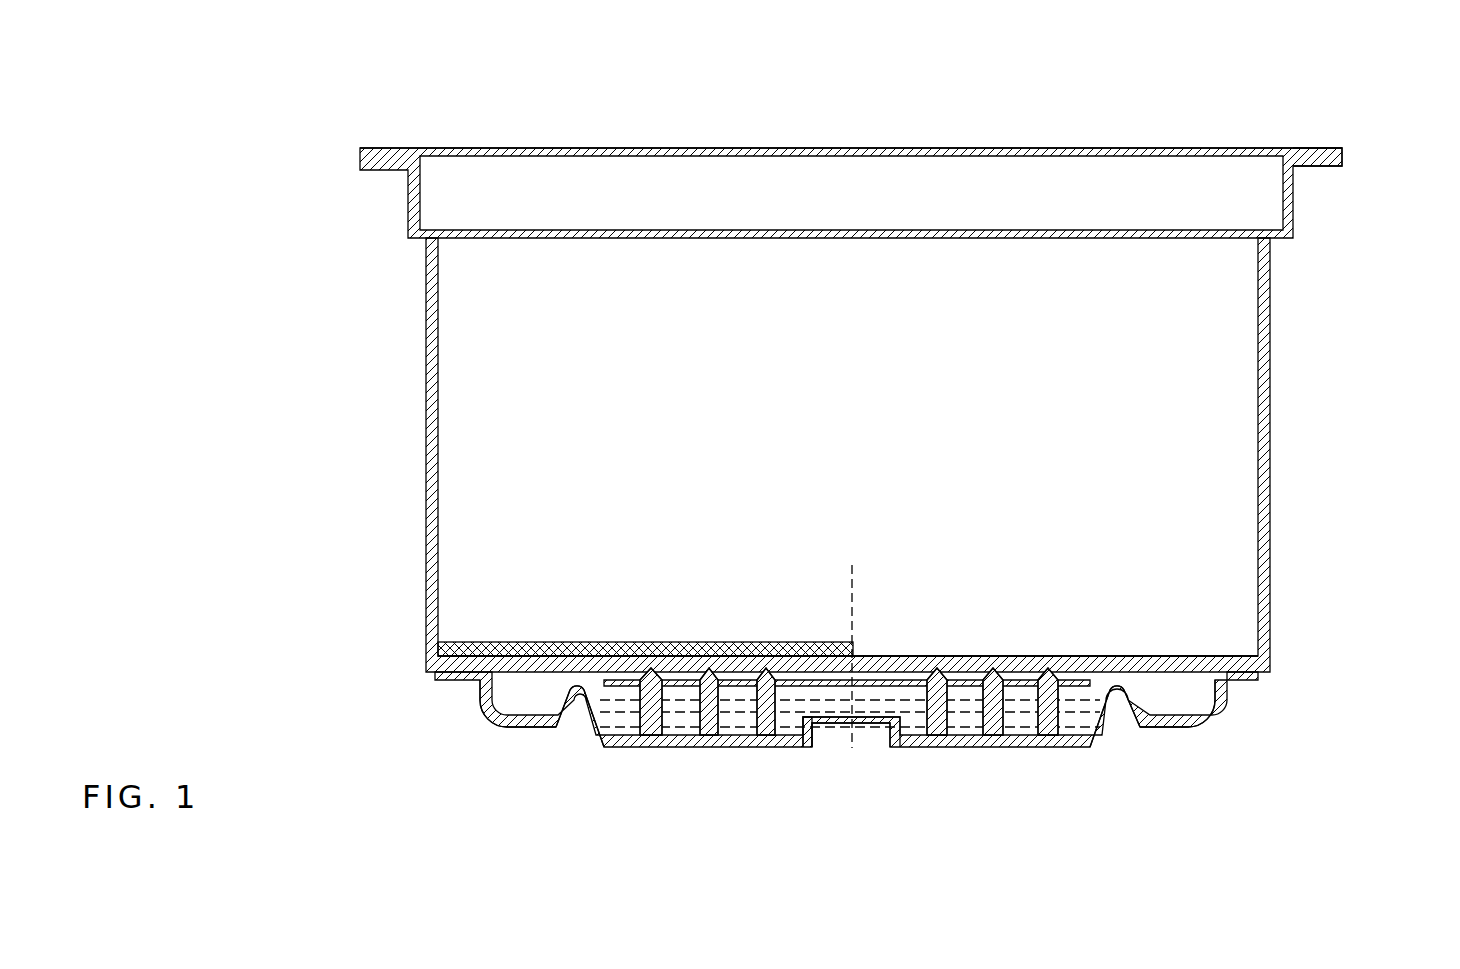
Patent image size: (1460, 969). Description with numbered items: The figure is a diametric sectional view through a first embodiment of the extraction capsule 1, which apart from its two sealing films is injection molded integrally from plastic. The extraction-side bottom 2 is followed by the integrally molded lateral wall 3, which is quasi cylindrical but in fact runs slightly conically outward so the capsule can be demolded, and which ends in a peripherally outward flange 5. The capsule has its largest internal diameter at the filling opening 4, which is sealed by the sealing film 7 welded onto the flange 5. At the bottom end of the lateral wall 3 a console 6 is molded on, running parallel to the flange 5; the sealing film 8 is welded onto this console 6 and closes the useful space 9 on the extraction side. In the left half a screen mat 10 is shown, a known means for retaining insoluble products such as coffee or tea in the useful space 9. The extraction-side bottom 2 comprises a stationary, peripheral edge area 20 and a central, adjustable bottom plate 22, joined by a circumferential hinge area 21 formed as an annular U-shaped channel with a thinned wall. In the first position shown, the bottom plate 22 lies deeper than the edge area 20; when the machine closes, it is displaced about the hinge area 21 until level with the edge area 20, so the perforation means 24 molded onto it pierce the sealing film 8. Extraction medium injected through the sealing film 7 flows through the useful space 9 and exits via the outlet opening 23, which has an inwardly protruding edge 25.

The extraction capsule 1 is at (1336, 270).
The extraction-side bottom 2 is at (948, 762).
The lateral wall 3 is at (1274, 412).
The filling opening 4 is at (780, 138).
The flange 5 is at (1325, 148).
The console 6 is at (1245, 672).
The sealing film 7 is at (948, 148).
The sealing film 8 is at (1066, 656).
The useful space 9 is at (864, 443).
The screen mat 10 is at (607, 642).
The edge area 20 is at (515, 722).
The hinge area 21 is at (578, 722).
The bottom plate 22 is at (712, 742).
The outlet opening 23 is at (880, 745).
The perforation means 24 is at (1036, 745).
The inwardly protruding edge 25 is at (810, 745).